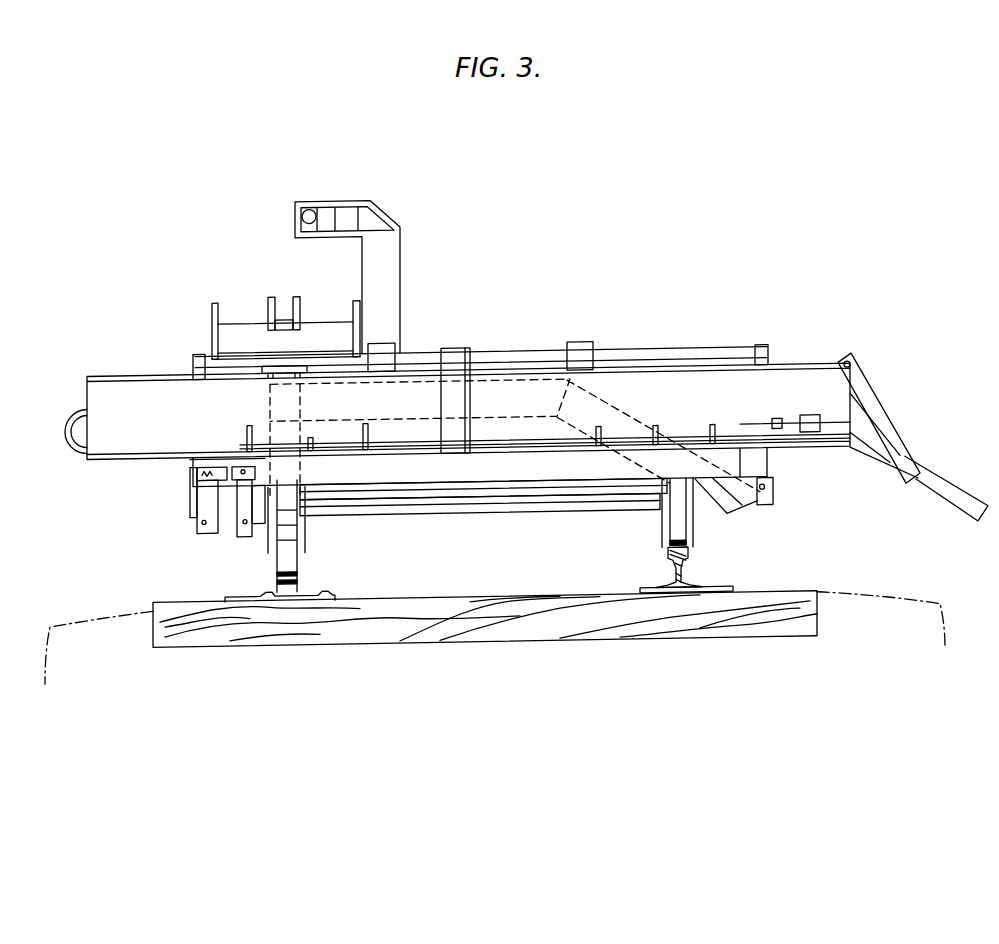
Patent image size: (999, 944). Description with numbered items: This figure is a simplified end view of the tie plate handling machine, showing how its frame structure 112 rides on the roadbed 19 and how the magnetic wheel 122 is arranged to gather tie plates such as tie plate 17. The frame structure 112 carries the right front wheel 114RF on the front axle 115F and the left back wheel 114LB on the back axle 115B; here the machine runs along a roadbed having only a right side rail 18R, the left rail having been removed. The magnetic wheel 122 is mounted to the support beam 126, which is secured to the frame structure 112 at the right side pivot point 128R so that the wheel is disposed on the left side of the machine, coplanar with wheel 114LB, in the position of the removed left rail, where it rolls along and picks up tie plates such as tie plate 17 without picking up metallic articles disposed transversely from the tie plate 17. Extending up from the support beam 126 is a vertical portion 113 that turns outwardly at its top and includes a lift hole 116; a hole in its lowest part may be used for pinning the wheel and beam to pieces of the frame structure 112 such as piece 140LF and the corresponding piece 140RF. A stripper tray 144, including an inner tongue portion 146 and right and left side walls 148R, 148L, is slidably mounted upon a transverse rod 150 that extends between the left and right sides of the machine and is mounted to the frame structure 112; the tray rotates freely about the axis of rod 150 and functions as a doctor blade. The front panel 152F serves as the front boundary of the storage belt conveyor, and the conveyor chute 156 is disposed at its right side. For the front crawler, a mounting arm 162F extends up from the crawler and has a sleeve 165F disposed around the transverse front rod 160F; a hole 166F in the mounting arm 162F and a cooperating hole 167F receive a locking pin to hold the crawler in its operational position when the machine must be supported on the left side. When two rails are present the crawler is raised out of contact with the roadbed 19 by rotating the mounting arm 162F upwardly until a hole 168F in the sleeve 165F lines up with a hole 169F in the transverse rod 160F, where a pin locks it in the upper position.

The tie plate 17 is at (315, 592).
The right side rail 18R is at (688, 580).
The roadbed 19 is at (492, 598).
The frame structure 112 is at (770, 466).
The vertical portion 113 is at (402, 250).
The left back wheel 114LB is at (305, 553).
The right front wheel 114RF is at (695, 526).
The back axle 115B is at (335, 508).
The front axle 115F is at (633, 507).
The lift hole 116 is at (311, 206).
The magnetic wheel 122 is at (282, 298).
The support beam 126 is at (610, 396).
The right side pivot point 128R is at (775, 497).
The frame piece 140LF is at (386, 337).
The right front clamp 140RF is at (588, 342).
The stripper tray 144 is at (240, 323).
The inner tongue portion 146 is at (286, 327).
The left side wall 148L is at (212, 312).
The right side wall 148R is at (355, 303).
The transverse rod 150 is at (706, 346).
The front panel 152F is at (803, 361).
The conveyor chute 156 is at (957, 488).
The transverse front rod 160F is at (217, 468).
The mounting arm 162F is at (253, 508).
The sleeve 165F is at (257, 450).
The hole 166F is at (245, 523).
The cooperating hole 167F is at (204, 523).
The hole 168F is at (243, 470).
The hole 169F is at (205, 465).